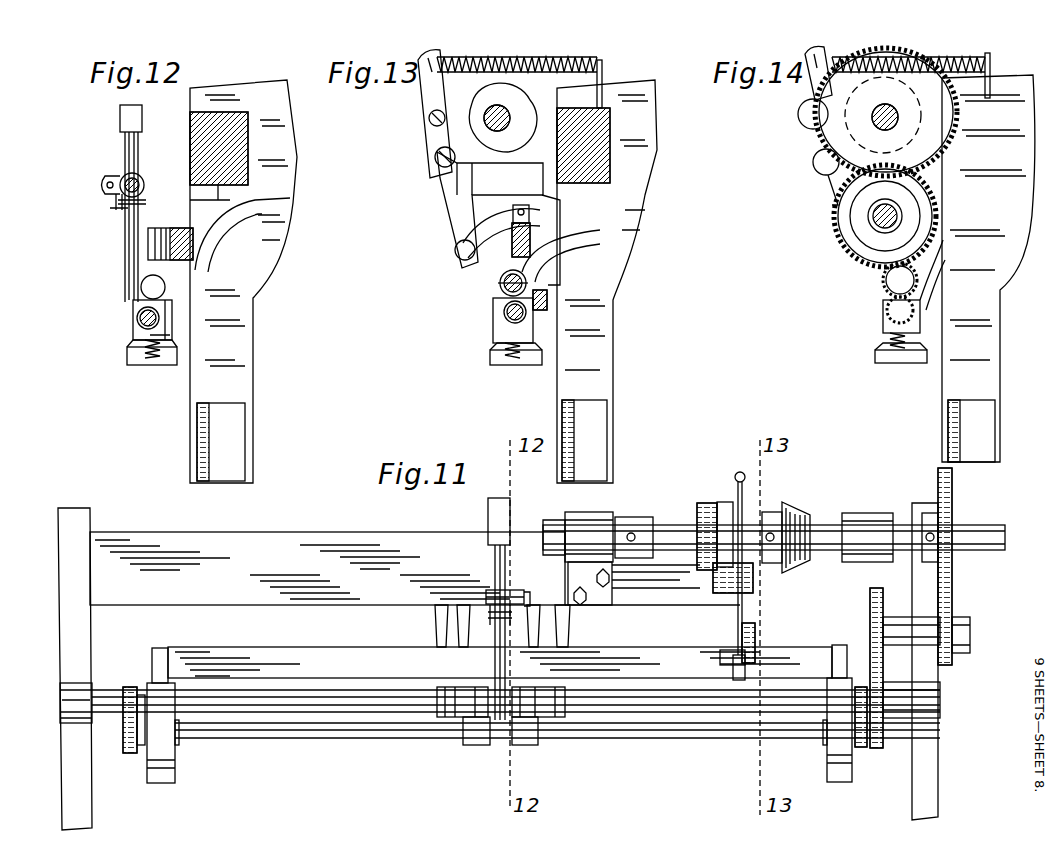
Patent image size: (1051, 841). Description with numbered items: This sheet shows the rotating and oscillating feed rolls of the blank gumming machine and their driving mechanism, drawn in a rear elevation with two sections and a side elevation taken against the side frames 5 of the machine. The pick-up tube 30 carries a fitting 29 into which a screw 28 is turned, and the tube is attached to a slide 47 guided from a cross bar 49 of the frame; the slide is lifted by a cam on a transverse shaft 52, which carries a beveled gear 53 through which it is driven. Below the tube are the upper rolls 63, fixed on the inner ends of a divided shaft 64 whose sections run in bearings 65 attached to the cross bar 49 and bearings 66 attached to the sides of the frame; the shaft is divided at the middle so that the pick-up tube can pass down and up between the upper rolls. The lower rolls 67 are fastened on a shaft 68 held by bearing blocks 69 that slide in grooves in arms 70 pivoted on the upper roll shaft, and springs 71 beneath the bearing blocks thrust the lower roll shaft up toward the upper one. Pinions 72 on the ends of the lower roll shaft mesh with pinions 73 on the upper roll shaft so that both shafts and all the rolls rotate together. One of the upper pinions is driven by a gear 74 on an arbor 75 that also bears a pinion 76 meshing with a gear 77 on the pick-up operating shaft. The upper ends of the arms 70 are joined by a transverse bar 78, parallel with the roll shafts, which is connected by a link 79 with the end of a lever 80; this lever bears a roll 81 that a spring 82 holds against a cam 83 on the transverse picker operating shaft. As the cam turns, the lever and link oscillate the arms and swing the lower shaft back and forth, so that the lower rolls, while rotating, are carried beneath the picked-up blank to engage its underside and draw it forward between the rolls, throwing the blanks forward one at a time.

In FIG. 12, the frame 5 is at (243, 281).
In FIG. 13, the frame 5 is at (607, 281).
In FIG. 14, the frame 5 is at (988, 268).
In FIG. 11, the frame 5 is at (498, 666).
In FIG. 12, the screw 28 is at (108, 204).
In FIG. 11, the screw 28 is at (514, 627).
In FIG. 12, the fitting 29 is at (140, 176).
In FIG. 11, the fitting 29 is at (518, 590).
In FIG. 12, the pick-up tube 30 is at (123, 254).
In FIG. 11, the pick-up tube 30 is at (495, 572).
In FIG. 12, the slide 47 is at (120, 120).
In FIG. 11, the slide 47 is at (488, 515).
In FIG. 12, the cross bar 49 is at (248, 147).
In FIG. 13, the cross bar 49 is at (600, 155).
In FIG. 11, the cross bar 49 is at (415, 568).
In FIG. 13, the transverse shaft 52 is at (499, 131).
In FIG. 14, the transverse shaft 52 is at (886, 128).
In FIG. 11, the transverse shaft 52 is at (975, 528).
In FIG. 11, the beveled gear 53 is at (805, 504).
In FIG. 12, the upper rolls 63 is at (145, 288).
In FIG. 13, the upper rolls 63 is at (500, 282).
In FIG. 11, the upper rolls 63 is at (460, 745).
In FIG. 13, the divided shaft 64 is at (505, 290).
In FIG. 11, the divided shaft 64 is at (312, 745).
In FIG. 12, the bearings 65 is at (245, 243).
In FIG. 13, the bearings 65 is at (565, 244).
In FIG. 11, the bearings 65 is at (435, 625).
In FIG. 13, the bearings 66 is at (561, 256).
In FIG. 14, the bearings 66 is at (924, 320).
In FIG. 11, the bearings 66 is at (58, 715).
In FIG. 12, the lower rolls 67 is at (138, 320).
In FIG. 13, the lower rolls 67 is at (505, 316).
In FIG. 11, the lower rolls 67 is at (476, 748).
In FIG. 12, the shaft 68 is at (135, 322).
In FIG. 13, the shaft 68 is at (500, 325).
In FIG. 11, the shaft 68 is at (352, 748).
In FIG. 12, the bearing blocks 69 is at (168, 322).
In FIG. 13, the bearing blocks 69 is at (540, 310).
In FIG. 14, the bearing blocks 69 is at (883, 326).
In FIG. 11, the bearing blocks 69 is at (180, 745).
In FIG. 12, the arms 70 is at (128, 355).
In FIG. 13, the arms 70 is at (492, 360).
In FIG. 14, the arms 70 is at (878, 354).
In FIG. 11, the arms 70 is at (178, 780).
In FIG. 12, the springs 71 is at (152, 360).
In FIG. 13, the springs 71 is at (514, 362).
In FIG. 14, the springs 71 is at (878, 365).
In FIG. 14, the pinions 72 is at (885, 310).
In FIG. 11, the pinions 72 is at (128, 753).
In FIG. 14, the pinions 73 is at (885, 282).
In FIG. 11, the pinions 73 is at (122, 688).
In FIG. 14, the gear 74 is at (840, 246).
In FIG. 11, the gear 74 is at (870, 628).
In FIG. 14, the arbor 75 is at (855, 222).
In FIG. 14, the pinion 76 is at (870, 202).
In FIG. 11, the pinion 76 is at (970, 617).
In FIG. 14, the gear 77 is at (822, 148).
In FIG. 11, the gear 77 is at (952, 570).
In FIG. 12, the bar 78 is at (178, 225).
In FIG. 13, the bar 78 is at (512, 248).
In FIG. 11, the bar 78 is at (500, 662).
In FIG. 13, the link 79 is at (470, 226).
In FIG. 11, the link 79 is at (755, 632).
In FIG. 13, the lever 80 is at (457, 200).
In FIG. 14, the lever 80 is at (818, 180).
In FIG. 11, the lever 80 is at (722, 630).
In FIG. 13, the roll 81 is at (425, 120).
In FIG. 14, the roll 81 is at (805, 112).
In FIG. 11, the roll 81 is at (697, 512).
In FIG. 13, the spring 82 is at (600, 62).
In FIG. 14, the spring 82 is at (1000, 52).
In FIG. 11, the spring 82 is at (745, 477).
In FIG. 13, the cam 83 is at (498, 90).
In FIG. 14, the cam 83 is at (892, 92).
In FIG. 11, the cam 83 is at (720, 502).